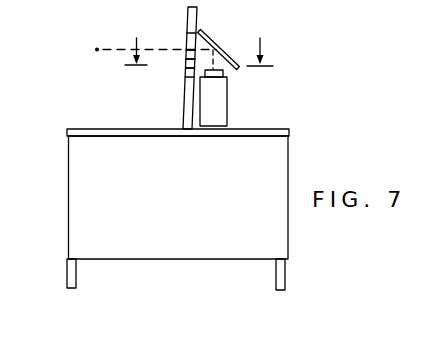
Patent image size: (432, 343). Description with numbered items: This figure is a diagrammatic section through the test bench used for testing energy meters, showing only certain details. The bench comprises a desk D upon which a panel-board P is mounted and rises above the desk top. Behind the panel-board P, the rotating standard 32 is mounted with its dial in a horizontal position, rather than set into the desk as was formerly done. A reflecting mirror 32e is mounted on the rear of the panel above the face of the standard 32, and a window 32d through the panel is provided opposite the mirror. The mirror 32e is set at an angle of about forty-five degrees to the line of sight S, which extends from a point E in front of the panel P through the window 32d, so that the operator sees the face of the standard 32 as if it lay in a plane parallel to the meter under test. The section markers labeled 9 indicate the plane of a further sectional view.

The desk D is at (64, 148).
The panel-board P is at (188, 17).
The line of sight S is at (185, 50).
The point in front of panel E is at (148, 50).
The section line 9- 9 is at (199, 45).
The rotating standard 32 is at (226, 98).
The window 32d is at (184, 58).
The reflecting mirror 32e is at (229, 34).